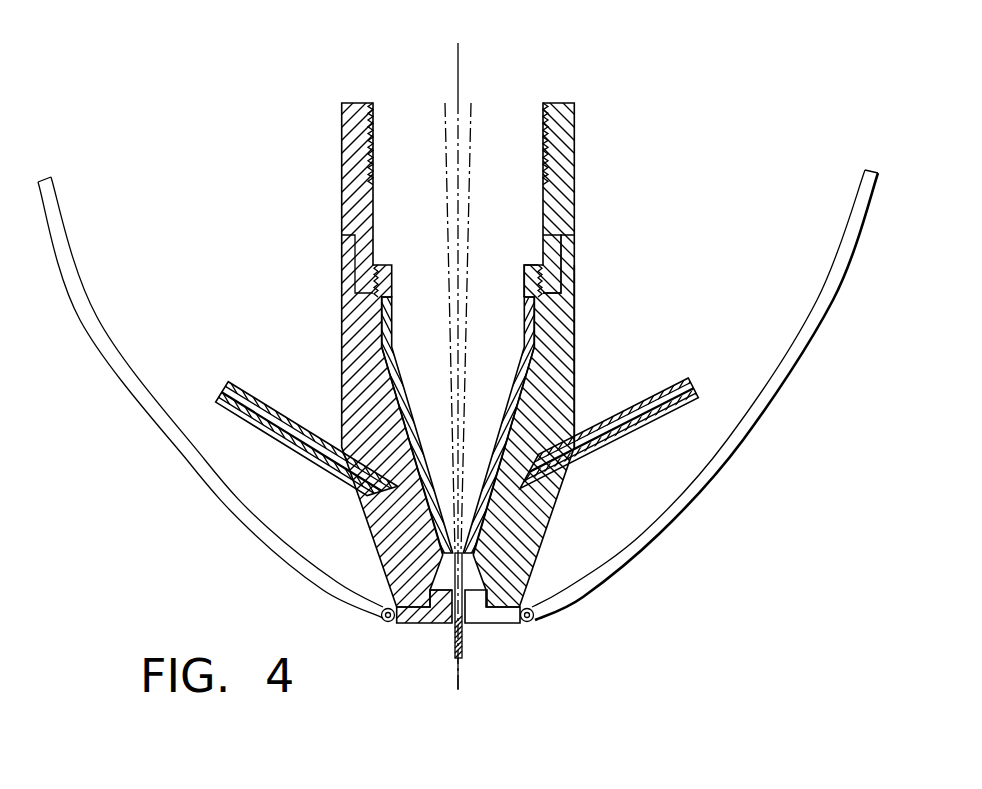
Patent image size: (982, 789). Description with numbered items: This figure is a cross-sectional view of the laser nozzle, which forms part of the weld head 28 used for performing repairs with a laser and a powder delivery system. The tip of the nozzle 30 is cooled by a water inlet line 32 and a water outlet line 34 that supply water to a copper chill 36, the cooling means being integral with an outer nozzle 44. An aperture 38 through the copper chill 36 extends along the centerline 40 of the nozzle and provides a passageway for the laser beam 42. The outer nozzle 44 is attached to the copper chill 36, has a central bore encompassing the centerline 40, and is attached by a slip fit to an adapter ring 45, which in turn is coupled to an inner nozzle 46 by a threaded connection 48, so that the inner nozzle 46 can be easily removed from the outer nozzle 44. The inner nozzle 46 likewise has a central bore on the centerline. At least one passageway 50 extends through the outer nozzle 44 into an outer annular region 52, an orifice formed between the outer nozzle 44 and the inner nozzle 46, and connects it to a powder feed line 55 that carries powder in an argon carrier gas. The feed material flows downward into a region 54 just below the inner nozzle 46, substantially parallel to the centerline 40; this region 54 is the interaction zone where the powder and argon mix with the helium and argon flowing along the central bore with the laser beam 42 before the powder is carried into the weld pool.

The weld head 28 is at (458, 395).
The nozzle 30 is at (160, 489).
The water inlet line 32 is at (158, 412).
The water outlet line 34 is at (745, 427).
The copper chill 36 is at (507, 632).
The aperture 38 is at (455, 622).
The centerline 40 is at (460, 67).
The laser beam 42 is at (464, 647).
The outer nozzle 44 is at (341, 347).
The adapter ring 45 is at (341, 114).
The inner nozzle 46 is at (393, 377).
The threaded connection 48 is at (545, 270).
The passageway 50 is at (385, 482).
The outer annular region 52 is at (575, 388).
The region 54 is at (448, 565).
The powder feed line 55 is at (673, 387).